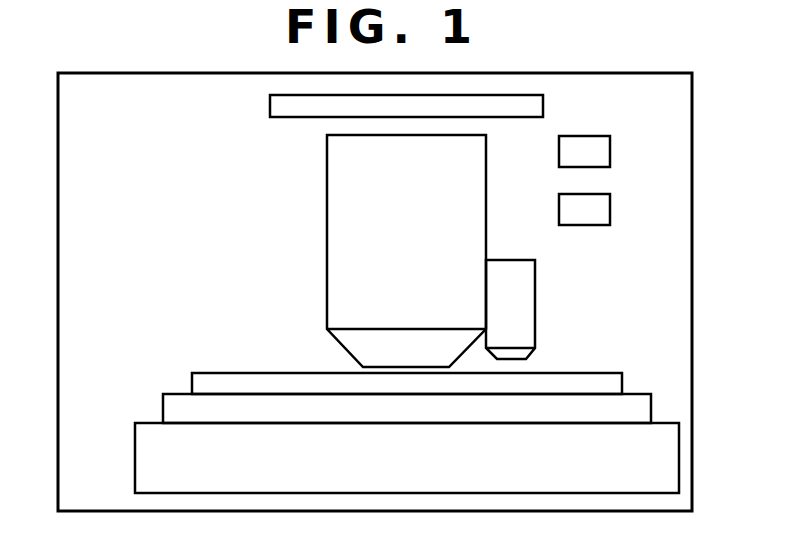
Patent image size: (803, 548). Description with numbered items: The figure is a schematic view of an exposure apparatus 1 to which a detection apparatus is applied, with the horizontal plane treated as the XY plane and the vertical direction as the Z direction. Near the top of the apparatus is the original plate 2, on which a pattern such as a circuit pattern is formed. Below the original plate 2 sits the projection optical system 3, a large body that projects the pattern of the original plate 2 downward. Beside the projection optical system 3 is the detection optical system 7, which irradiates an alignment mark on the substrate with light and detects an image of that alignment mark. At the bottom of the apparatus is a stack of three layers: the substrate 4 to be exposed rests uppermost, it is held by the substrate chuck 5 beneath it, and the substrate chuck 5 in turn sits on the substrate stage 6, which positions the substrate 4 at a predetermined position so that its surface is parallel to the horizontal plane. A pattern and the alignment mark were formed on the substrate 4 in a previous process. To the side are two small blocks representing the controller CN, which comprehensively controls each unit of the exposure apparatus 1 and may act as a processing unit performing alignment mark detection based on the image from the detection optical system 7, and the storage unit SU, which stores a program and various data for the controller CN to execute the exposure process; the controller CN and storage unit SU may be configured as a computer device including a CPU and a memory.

The exposure apparatus 1 is at (693, 257).
The original plate 2 is at (269, 106).
The projection optical system 3 is at (327, 213).
The substrate 4 is at (192, 385).
The substrate chuck 5 is at (163, 412).
The substrate stage 6 is at (135, 465).
The detection optical system 7 is at (536, 303).
The controller CN is at (610, 149).
The storage unit SU is at (610, 207).